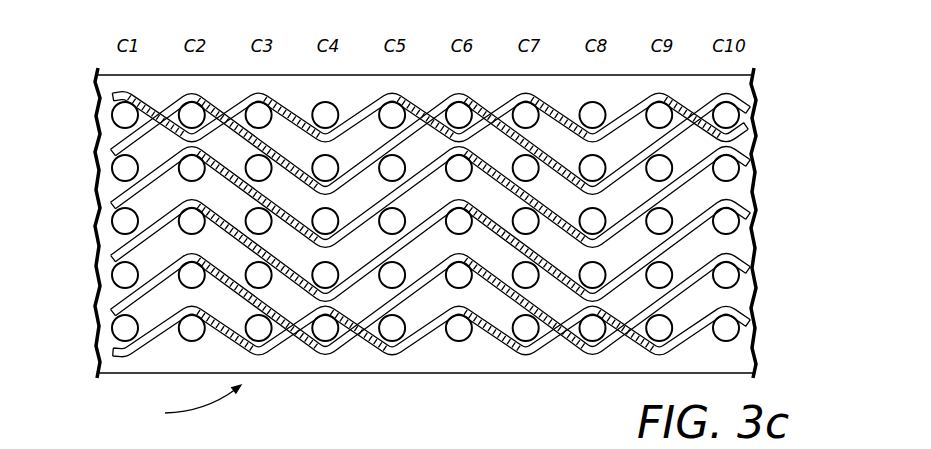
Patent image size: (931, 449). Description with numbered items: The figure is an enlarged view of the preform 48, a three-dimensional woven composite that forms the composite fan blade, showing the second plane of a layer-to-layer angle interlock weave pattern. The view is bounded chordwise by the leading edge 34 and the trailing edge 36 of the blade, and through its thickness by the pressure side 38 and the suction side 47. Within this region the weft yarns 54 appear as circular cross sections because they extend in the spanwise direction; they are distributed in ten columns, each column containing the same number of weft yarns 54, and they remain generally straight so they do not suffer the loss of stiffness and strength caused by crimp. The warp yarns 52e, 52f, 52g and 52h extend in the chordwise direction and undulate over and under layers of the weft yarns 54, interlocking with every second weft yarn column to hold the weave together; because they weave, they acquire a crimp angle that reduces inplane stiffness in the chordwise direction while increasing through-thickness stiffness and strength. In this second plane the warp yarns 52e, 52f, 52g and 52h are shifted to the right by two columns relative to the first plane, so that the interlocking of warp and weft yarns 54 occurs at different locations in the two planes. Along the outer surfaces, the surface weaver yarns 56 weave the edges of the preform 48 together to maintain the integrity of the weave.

The leading edge 34 is at (757, 82).
The trailing edge 36 is at (95, 124).
The pressure side 38 is at (163, 74).
The suction side 47 is at (448, 374).
The preform 48 is at (189, 404).
The warp yarn 52e is at (750, 108).
The warp yarn 52f is at (750, 161).
The warp yarn 52g is at (750, 215).
The warp yarn 52h is at (750, 269).
The weft yarns 54 is at (425, 221).
The surface weaver yarns 56 is at (750, 126).